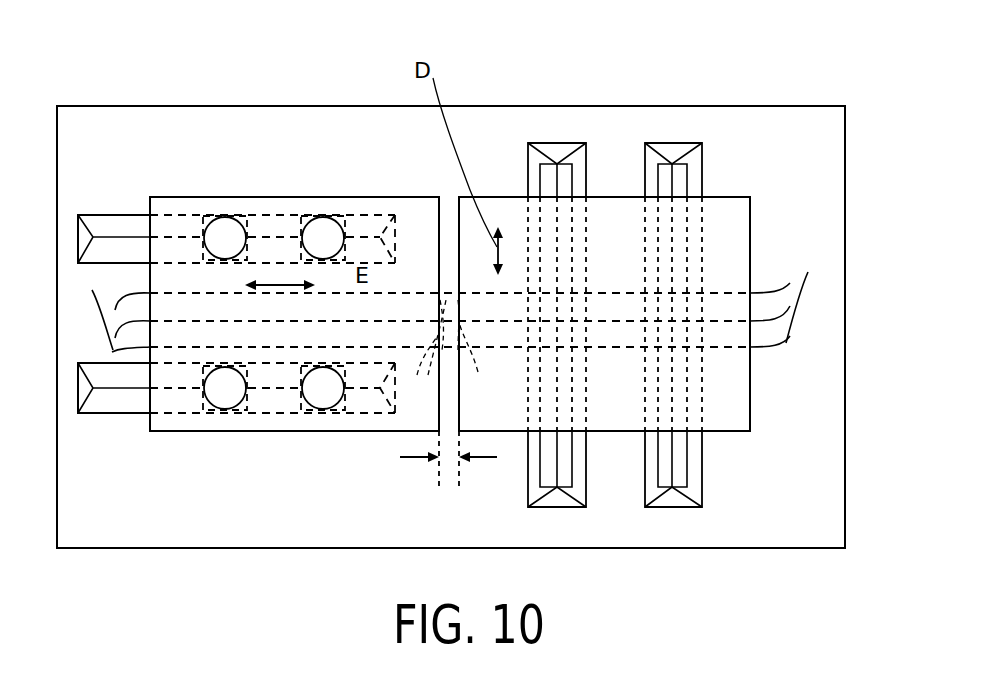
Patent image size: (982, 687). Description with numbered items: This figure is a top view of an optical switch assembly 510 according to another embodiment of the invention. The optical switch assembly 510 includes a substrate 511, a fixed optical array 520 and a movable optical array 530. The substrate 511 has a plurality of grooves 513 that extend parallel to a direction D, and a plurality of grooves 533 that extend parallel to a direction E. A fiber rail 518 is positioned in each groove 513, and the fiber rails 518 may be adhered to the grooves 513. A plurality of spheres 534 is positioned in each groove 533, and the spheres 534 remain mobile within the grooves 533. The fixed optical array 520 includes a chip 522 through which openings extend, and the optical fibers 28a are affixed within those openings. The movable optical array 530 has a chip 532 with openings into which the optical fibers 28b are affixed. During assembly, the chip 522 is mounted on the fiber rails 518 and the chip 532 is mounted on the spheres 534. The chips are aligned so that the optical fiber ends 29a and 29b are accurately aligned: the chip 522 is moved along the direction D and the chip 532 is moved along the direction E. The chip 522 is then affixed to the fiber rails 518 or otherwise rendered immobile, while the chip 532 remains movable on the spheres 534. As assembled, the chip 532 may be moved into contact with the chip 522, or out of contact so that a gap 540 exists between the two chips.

The optical switch assembly 510 is at (740, 66).
The substrate 511 is at (806, 515).
The grooves 513 is at (542, 143).
The fiber rail 518 is at (568, 473).
The fixed optical array 520 is at (728, 214).
The chip 522 is at (728, 250).
The optical fibers 28a is at (495, 297).
The optical fibers 28b is at (109, 309).
The optical fiber ends 29a is at (486, 350).
The optical fiber ends 29b is at (424, 352).
The movable optical array 530 is at (306, 438).
The chip 532 is at (243, 205).
The grooves 533 is at (112, 225).
The spheres 534 is at (241, 236).
The gap 540 is at (406, 458).